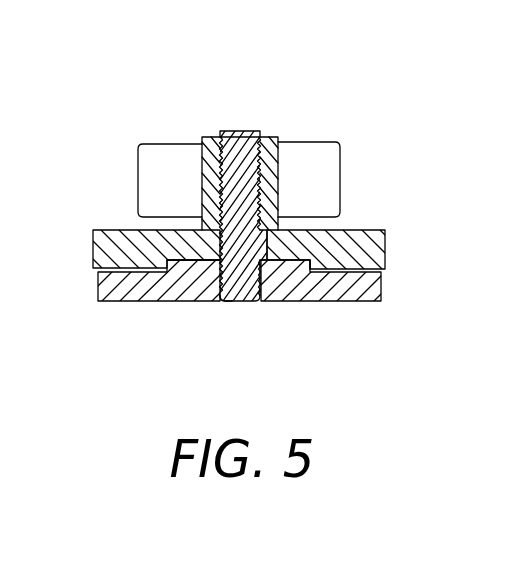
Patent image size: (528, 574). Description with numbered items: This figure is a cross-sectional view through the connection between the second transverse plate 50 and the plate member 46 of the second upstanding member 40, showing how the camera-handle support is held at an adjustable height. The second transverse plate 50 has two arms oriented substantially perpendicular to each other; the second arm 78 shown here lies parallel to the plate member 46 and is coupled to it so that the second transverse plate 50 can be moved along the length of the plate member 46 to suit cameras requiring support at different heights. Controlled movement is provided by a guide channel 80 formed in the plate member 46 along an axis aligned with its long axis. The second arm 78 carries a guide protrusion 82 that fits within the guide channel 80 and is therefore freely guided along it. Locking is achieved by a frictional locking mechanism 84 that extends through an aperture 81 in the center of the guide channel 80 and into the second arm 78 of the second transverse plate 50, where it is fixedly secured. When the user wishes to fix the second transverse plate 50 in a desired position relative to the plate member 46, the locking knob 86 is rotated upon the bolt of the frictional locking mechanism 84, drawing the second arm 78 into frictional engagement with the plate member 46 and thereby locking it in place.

The second upstanding member 40 is at (93, 229).
The plate member 46 is at (370, 250).
The second transverse plate 50 is at (124, 301).
The second arm 78 is at (352, 301).
The guide channel 80 is at (205, 262).
The aperture 81 is at (223, 263).
The guide protrusion 82 is at (313, 262).
The frictional locking mechanism 84 is at (243, 131).
The locking knob 86 is at (213, 137).